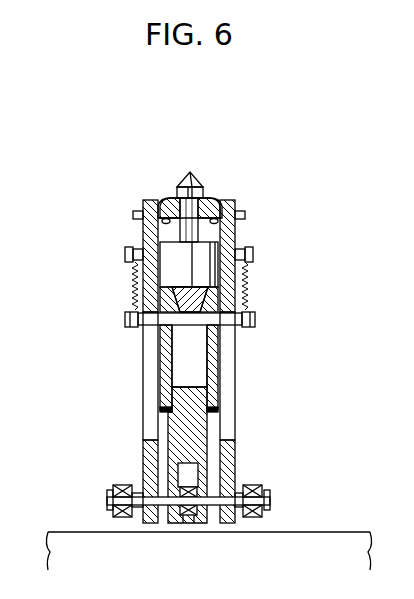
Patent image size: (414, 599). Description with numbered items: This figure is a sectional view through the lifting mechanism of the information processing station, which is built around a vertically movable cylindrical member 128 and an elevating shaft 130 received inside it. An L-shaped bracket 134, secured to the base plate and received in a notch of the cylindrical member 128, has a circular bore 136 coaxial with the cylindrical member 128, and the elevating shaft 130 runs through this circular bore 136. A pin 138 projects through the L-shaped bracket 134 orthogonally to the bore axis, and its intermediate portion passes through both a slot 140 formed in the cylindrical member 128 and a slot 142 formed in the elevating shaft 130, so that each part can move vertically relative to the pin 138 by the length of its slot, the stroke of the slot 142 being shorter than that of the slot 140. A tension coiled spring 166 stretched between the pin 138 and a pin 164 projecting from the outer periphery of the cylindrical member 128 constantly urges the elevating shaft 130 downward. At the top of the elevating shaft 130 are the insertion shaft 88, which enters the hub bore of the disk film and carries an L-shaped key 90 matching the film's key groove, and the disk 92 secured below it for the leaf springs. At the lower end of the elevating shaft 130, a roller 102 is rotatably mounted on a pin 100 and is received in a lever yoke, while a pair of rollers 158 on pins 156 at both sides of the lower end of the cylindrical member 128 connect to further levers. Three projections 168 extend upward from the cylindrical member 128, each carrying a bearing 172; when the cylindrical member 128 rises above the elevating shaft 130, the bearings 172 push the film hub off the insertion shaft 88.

The insertion shaft 88 is at (204, 187).
The key 90 is at (190, 172).
The disk 92 is at (242, 212).
The pin 100 is at (192, 506).
The roller 102 is at (185, 517).
The cylindrical member 128 is at (228, 455).
The elevating shaft 130 is at (200, 415).
The L-shaped bracket 134 is at (218, 360).
The circular bore 136 is at (164, 358).
The pin 138 is at (255, 318).
The slot 140 is at (232, 382).
The slot 142 is at (200, 348).
The pins 156 is at (107, 500).
The rollers 158 is at (121, 485).
The pin 164 is at (255, 253).
The tension coiled spring 166 is at (248, 282).
The projections 168 is at (237, 226).
The bearings 172 is at (160, 199).